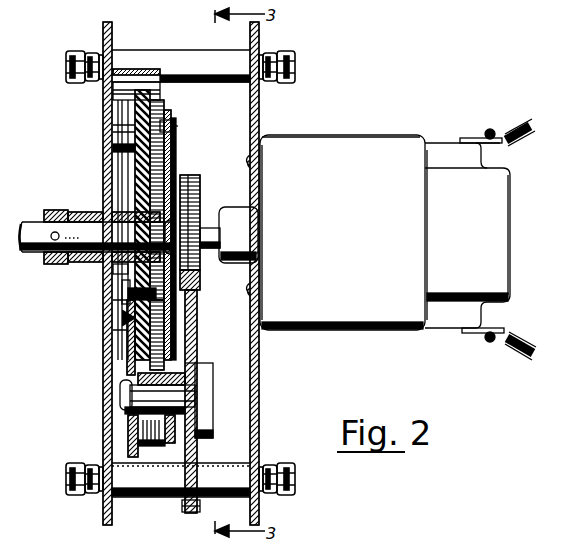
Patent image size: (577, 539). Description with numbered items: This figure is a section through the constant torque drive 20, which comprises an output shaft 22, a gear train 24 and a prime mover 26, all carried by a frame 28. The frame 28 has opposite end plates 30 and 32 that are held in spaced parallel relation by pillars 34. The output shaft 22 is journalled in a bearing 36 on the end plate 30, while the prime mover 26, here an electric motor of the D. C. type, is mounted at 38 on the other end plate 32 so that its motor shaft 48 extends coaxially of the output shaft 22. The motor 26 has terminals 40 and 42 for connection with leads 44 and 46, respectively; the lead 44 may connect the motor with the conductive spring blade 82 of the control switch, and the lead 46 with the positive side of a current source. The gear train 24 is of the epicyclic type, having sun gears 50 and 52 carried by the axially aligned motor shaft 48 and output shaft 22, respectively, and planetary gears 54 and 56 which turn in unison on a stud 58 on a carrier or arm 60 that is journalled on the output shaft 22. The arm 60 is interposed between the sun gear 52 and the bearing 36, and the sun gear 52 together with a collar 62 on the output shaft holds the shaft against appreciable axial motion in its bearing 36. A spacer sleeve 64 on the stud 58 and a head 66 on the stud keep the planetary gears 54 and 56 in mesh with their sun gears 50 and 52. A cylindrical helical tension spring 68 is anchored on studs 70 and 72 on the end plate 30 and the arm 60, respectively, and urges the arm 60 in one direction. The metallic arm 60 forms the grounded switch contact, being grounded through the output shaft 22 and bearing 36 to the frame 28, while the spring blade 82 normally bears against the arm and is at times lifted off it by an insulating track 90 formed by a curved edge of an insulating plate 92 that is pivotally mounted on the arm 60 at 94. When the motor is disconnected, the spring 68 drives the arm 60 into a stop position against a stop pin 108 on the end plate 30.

The constant torque drive 20 is at (178, 265).
The output shaft 22 is at (32, 227).
The gear train 24 is at (191, 319).
The prime mover 26 is at (398, 227).
The frame 28 is at (178, 275).
The end plate 30 is at (107, 378).
The end plate 32 is at (263, 394).
The pillars 34 is at (181, 277).
The bearing 36 is at (82, 213).
The motor mounting 38 is at (247, 167).
The terminal 40 is at (478, 333).
The terminal 42 is at (475, 138).
The lead 44 is at (510, 333).
The lead 46 is at (504, 133).
The motor shaft 48 is at (208, 225).
The sun gear 50 is at (200, 177).
The sun gear 52 is at (170, 140).
The planetary gear 54 is at (197, 340).
The planetary gear 56 is at (182, 488).
The stud 58 is at (157, 393).
The carrier or arm 60 is at (127, 342).
The collar 62 is at (56, 211).
The spacer sleeve 64 is at (127, 363).
The head 66 is at (207, 380).
The spring 68 is at (128, 328).
The stud 70 is at (118, 130).
The stud 72 is at (165, 445).
The spring blade 82 is at (132, 67).
The insulating track 90 is at (142, 92).
The insulating plate 92 is at (153, 123).
The pivot support 94 is at (117, 297).
The stop pin 108 is at (117, 274).